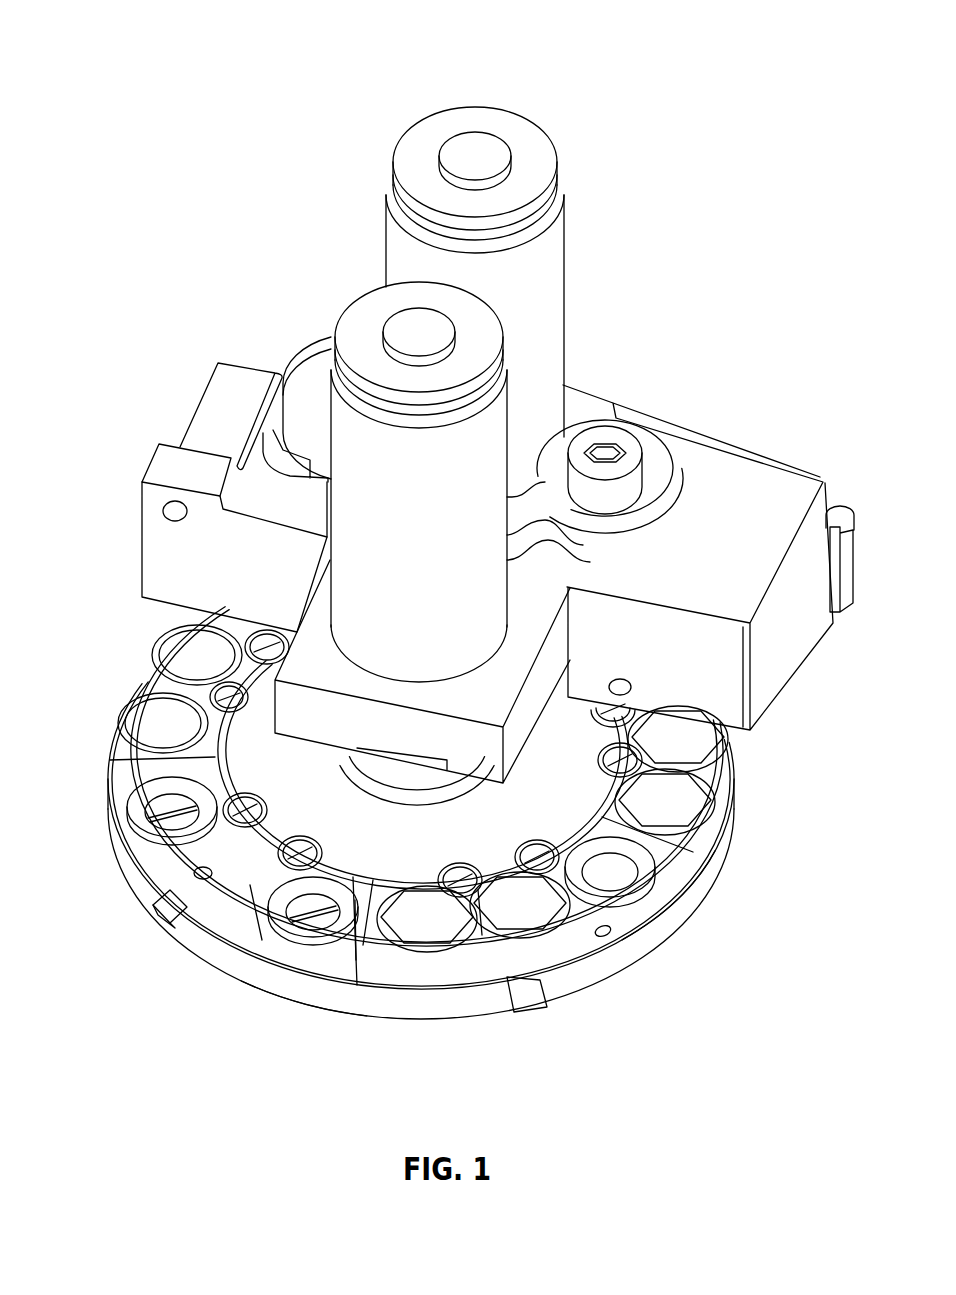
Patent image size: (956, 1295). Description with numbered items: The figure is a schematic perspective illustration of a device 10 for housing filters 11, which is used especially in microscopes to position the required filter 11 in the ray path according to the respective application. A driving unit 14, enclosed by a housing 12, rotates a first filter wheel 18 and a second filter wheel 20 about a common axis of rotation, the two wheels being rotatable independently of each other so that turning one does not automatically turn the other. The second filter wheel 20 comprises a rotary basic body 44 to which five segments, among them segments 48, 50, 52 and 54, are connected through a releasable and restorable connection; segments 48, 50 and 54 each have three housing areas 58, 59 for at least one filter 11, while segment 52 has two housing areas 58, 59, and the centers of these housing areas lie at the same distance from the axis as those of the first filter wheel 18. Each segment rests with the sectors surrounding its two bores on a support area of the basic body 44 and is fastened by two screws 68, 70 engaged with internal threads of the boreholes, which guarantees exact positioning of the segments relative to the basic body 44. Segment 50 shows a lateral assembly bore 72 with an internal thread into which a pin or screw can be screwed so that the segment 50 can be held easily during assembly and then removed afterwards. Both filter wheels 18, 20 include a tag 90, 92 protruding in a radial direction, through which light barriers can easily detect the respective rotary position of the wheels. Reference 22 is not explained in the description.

The device 10 is at (165, 112).
The driving unit 14 is at (694, 290).
The housing 12 is at (722, 497).
The screw 68 is at (262, 634).
The segment 54 is at (147, 677).
The screw 70 is at (220, 697).
The basic body 44 is at (240, 763).
The second filter wheel 20 is at (150, 875).
The lower base member 22 is at (162, 1016).
The first filter wheel 18 is at (297, 998).
The segment 50 is at (660, 897).
The segment 48 is at (703, 770).
The filter 11 is at (425, 930).
The housing area 59 is at (347, 920).
The housing area 58 is at (476, 935).
The segment 52 is at (246, 893).
The tag 90 is at (165, 908).
The tag 92 is at (536, 995).
The assembly bore 72 is at (608, 938).